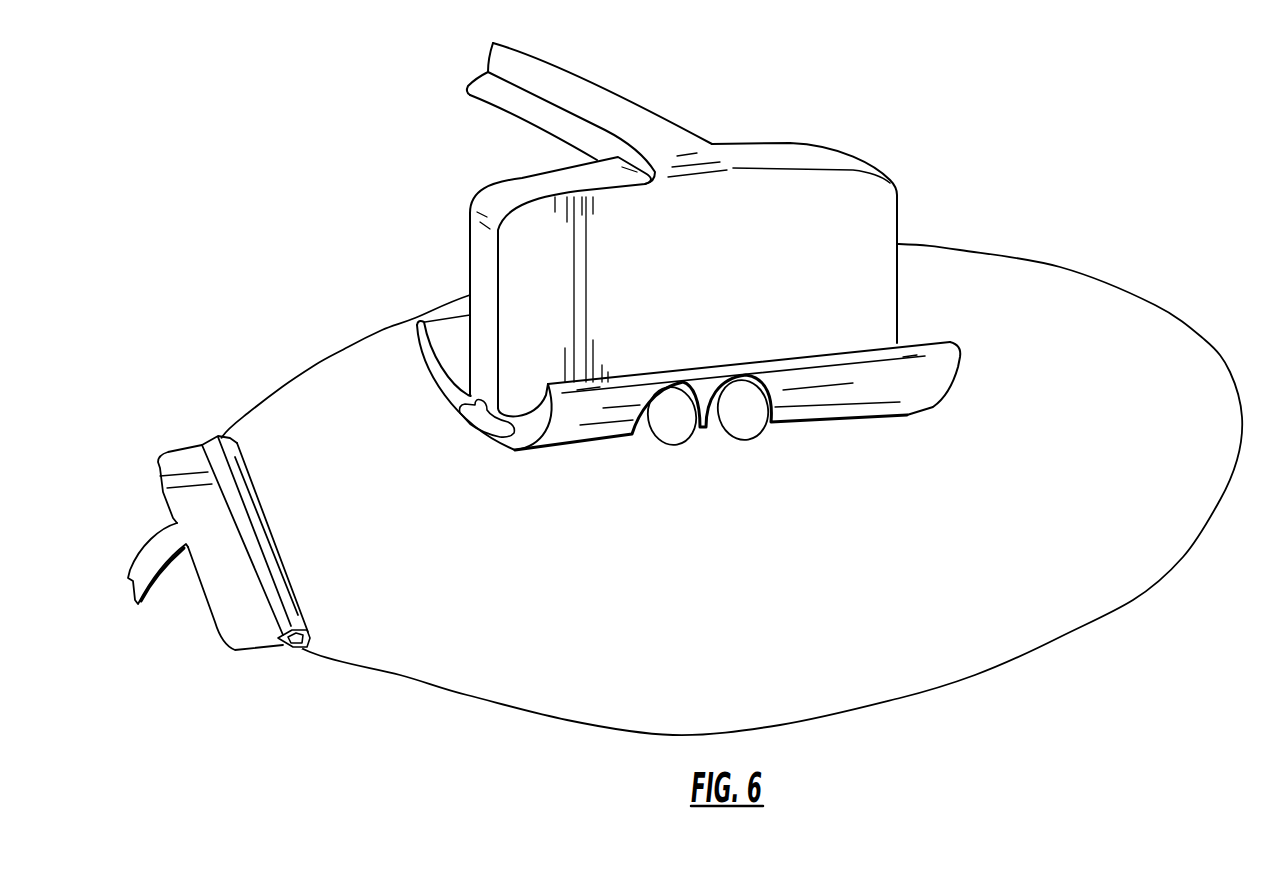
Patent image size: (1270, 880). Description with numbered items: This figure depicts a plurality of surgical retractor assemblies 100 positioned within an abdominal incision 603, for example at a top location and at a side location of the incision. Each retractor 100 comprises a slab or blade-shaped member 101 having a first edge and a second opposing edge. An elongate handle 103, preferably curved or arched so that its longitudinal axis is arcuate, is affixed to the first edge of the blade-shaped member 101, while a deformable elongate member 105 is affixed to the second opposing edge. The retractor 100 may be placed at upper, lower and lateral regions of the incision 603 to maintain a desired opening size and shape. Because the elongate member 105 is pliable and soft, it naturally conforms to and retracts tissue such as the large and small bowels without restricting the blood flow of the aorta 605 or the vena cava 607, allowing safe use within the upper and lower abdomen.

The surgical retractor assembly 100 is at (882, 132).
The slab or blade-shaped member 101 is at (477, 247).
The elongate handle 103 is at (605, 100).
The deformable elongate member 105 is at (482, 442).
The abdominal incision 603 is at (1016, 658).
The aorta 605 is at (672, 443).
The vena cava 607 is at (740, 433).